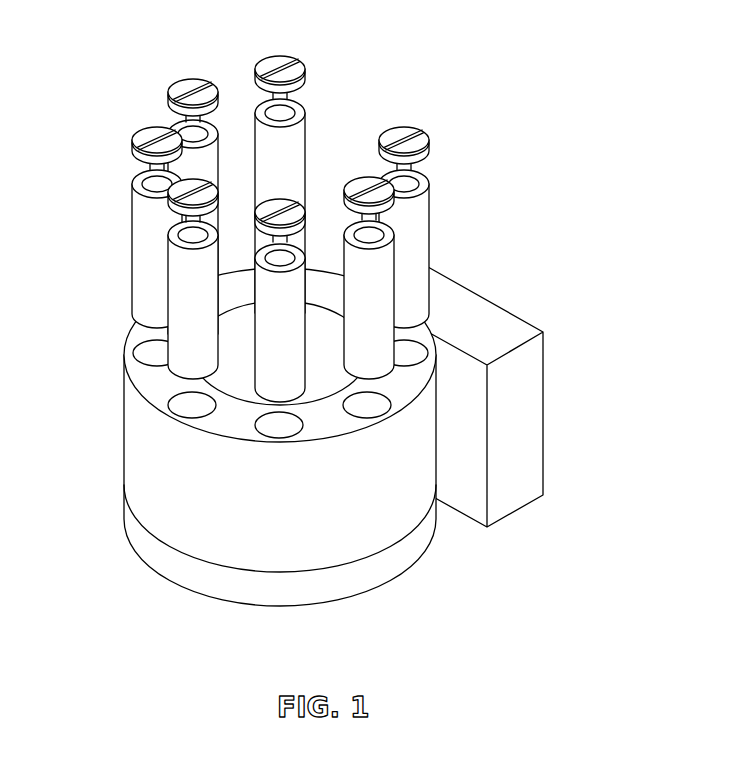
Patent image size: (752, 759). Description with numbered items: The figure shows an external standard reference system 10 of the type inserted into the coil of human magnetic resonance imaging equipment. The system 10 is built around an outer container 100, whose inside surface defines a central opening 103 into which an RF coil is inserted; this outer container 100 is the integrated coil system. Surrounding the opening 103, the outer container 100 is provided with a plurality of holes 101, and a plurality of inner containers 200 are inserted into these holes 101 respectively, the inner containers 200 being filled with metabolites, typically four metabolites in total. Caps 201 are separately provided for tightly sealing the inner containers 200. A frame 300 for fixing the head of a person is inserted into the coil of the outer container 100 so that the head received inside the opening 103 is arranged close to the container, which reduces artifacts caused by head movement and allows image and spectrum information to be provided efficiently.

The system 10 is at (335, 338).
The outer container 100 is at (240, 466).
The holes 101 is at (188, 397).
The opening 103 is at (226, 378).
The inner containers 200 is at (420, 222).
The caps 201 is at (429, 138).
The frame 300 is at (528, 403).